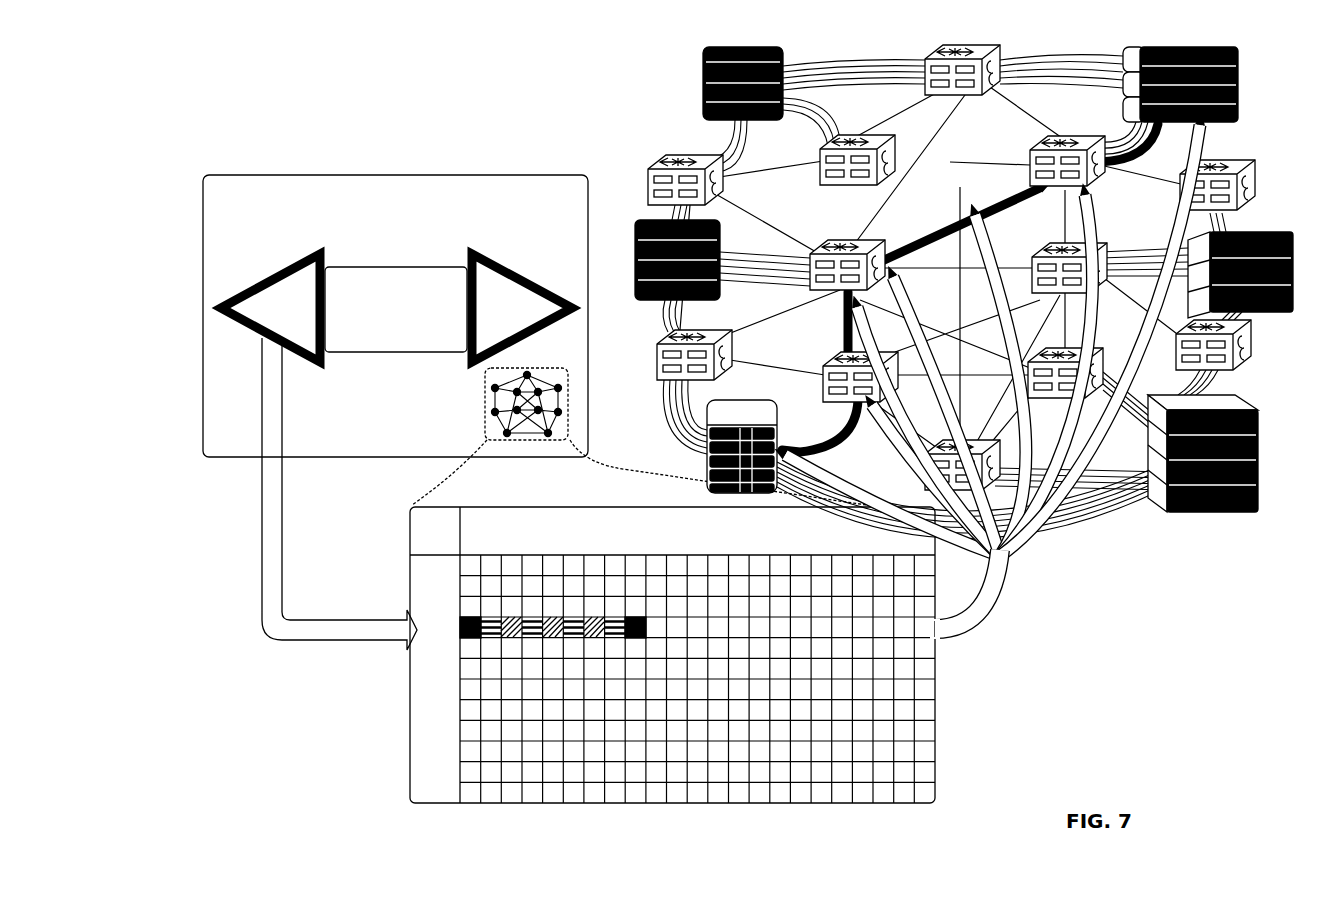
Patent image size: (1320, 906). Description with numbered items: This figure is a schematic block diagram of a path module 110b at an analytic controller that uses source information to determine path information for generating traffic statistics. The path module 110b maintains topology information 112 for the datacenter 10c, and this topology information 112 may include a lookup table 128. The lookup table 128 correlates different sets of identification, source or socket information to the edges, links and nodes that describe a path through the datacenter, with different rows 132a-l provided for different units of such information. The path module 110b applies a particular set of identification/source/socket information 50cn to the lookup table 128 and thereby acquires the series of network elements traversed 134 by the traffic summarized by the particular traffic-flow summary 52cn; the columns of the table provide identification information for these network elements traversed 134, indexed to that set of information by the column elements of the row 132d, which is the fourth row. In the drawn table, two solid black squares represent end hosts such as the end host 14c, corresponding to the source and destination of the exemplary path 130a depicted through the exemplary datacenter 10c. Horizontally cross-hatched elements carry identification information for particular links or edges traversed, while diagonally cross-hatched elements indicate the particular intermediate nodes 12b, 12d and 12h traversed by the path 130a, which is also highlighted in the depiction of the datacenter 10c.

The datacenter 10c is at (961, 337).
The intermediate node 12b is at (825, 362).
The intermediate node 12d is at (838, 240).
The intermediate node 12h is at (1052, 190).
The end host 14c is at (1140, 113).
The identification/source/socket information 50cn is at (548, 253).
The traffic-flow summary 52cn is at (396, 309).
The path module 110b is at (395, 316).
The topology information 112 is at (483, 420).
The lookup table 128 is at (440, 655).
The path 130a is at (648, 616).
The rows 132a-l is at (407, 557).
The row 132d is at (506, 629).
The network elements traversed 134 is at (672, 655).